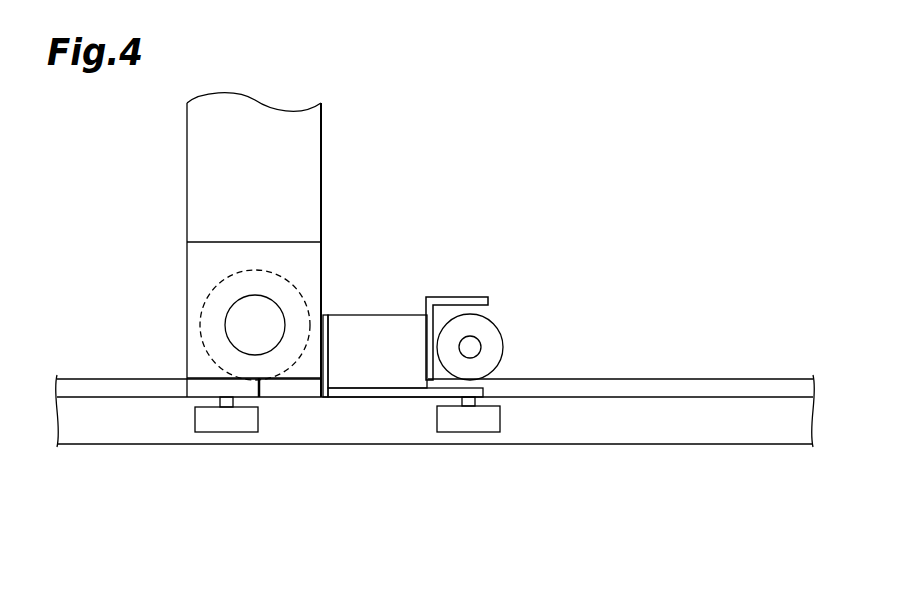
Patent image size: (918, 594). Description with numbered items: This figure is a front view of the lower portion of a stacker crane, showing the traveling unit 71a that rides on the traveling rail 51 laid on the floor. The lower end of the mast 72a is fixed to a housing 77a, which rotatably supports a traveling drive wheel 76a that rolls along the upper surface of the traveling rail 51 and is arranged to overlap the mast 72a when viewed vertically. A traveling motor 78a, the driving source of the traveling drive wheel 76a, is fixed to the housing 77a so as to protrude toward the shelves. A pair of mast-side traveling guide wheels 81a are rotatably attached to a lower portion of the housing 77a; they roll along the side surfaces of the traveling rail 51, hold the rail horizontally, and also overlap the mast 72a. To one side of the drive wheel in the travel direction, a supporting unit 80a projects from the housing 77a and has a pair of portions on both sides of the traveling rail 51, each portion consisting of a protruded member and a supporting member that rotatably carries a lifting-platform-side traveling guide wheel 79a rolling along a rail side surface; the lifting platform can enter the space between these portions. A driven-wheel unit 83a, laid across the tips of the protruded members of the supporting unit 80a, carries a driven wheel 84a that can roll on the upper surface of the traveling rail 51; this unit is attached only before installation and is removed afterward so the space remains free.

The traveling rail 51 is at (684, 412).
The traveling unit 71a is at (374, 256).
The mast 72a is at (313, 138).
The traveling drive wheel 76a is at (197, 353).
The housing 77a is at (207, 265).
The traveling motor 78a is at (268, 337).
The lifting-platform-side traveling guide wheel 79a is at (475, 422).
The supporting unit 80a is at (395, 375).
The mast-side traveling guide wheel 81a is at (222, 420).
The driven-wheel unit 83a is at (465, 297).
The driven wheel 84a is at (492, 345).